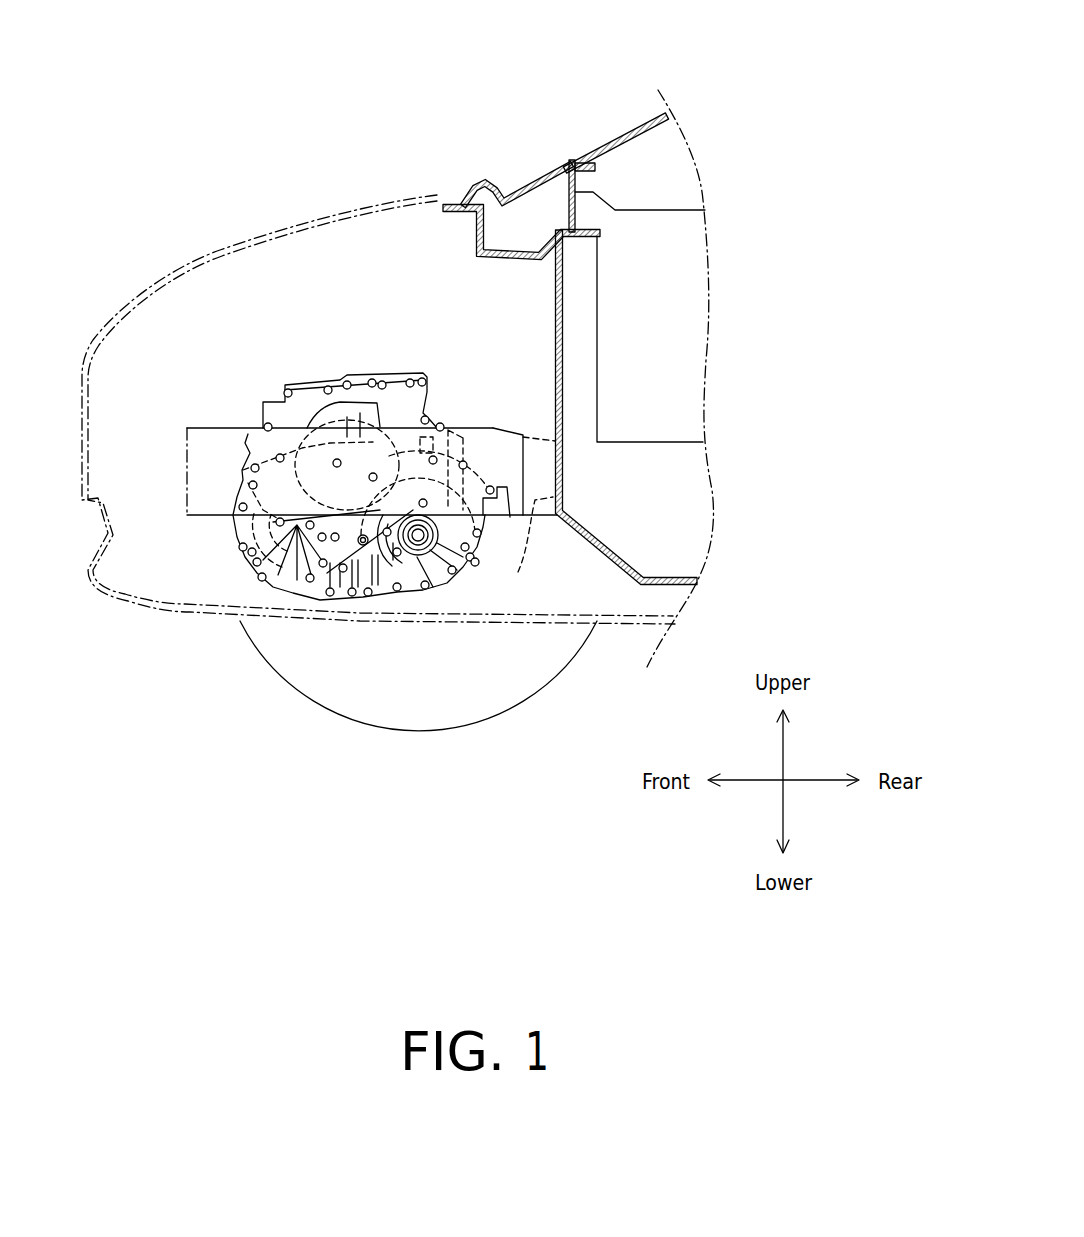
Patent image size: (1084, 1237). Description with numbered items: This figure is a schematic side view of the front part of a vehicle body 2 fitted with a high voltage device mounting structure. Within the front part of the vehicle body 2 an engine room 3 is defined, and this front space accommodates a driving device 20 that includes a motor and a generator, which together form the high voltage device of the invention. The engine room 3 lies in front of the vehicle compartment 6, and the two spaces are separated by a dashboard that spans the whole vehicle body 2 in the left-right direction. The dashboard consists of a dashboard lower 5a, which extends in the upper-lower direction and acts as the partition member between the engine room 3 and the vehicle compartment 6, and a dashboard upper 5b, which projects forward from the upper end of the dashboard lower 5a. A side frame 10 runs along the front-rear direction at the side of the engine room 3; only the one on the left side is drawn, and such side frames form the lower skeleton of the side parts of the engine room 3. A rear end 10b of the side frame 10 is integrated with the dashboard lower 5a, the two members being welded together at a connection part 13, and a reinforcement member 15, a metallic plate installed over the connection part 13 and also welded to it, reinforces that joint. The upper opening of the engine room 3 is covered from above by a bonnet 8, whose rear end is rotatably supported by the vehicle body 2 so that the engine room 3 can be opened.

The vehicle body 2 is at (605, 120).
The engine room 3 is at (258, 331).
The dashboard lower 5a is at (565, 309).
The dashboard upper 5b is at (512, 252).
The vehicle compartment 6 is at (659, 503).
The bonnet 8 is at (221, 250).
The side frame 10 is at (214, 497).
The rear end of the side frame 10b is at (516, 548).
The connection part 13 is at (548, 520).
The reinforcement member 15 is at (523, 457).
The driving device 20 is at (431, 358).